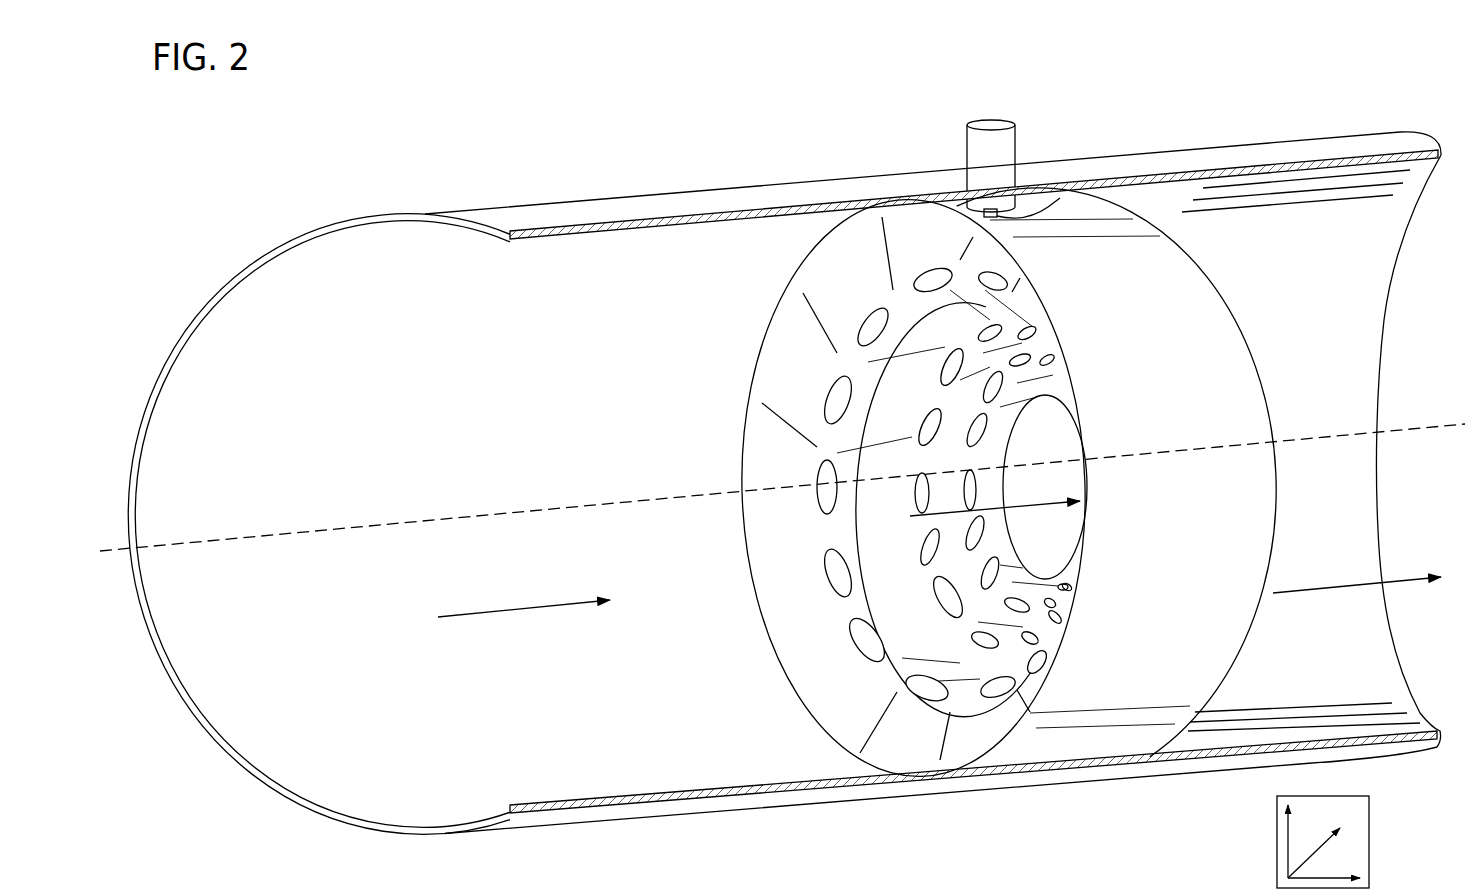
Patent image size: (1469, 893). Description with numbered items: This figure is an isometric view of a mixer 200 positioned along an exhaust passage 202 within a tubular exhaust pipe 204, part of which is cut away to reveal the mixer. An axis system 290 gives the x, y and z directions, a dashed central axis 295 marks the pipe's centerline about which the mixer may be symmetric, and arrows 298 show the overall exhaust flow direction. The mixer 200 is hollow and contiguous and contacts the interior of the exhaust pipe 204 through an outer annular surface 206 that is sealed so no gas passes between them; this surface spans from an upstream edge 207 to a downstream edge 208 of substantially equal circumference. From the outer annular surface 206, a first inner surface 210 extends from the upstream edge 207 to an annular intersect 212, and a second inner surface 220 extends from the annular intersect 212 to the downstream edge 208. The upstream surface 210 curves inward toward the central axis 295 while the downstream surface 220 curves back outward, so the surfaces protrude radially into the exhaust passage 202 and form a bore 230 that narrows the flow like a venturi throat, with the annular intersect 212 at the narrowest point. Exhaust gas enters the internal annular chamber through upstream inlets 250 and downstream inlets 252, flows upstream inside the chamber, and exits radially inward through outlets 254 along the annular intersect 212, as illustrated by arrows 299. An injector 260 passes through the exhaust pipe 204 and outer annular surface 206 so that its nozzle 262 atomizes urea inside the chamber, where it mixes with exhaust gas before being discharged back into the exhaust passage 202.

The mixer 200 is at (1115, 70).
The exhaust passage 202 is at (564, 482).
The exhaust pipe 204 is at (575, 222).
The outer annular surface 206 is at (1194, 506).
The upstream edge 207 is at (763, 356).
The downstream edge 208 is at (1233, 306).
The first inner surface 210 is at (796, 556).
The annular intersect 212 is at (828, 443).
The second inner surface 220 is at (898, 536).
The bore 230 is at (1064, 502).
The upstream inlets 250 is at (912, 417).
The downstream inlets 252 is at (968, 428).
The outlets 254 is at (808, 408).
The injector 260 is at (1007, 162).
The nozzle 262 is at (1023, 204).
The axis system 290 is at (1370, 818).
The central axis 295 is at (1395, 432).
The arrows 298 is at (523, 607).
The arrows 299 is at (866, 587).